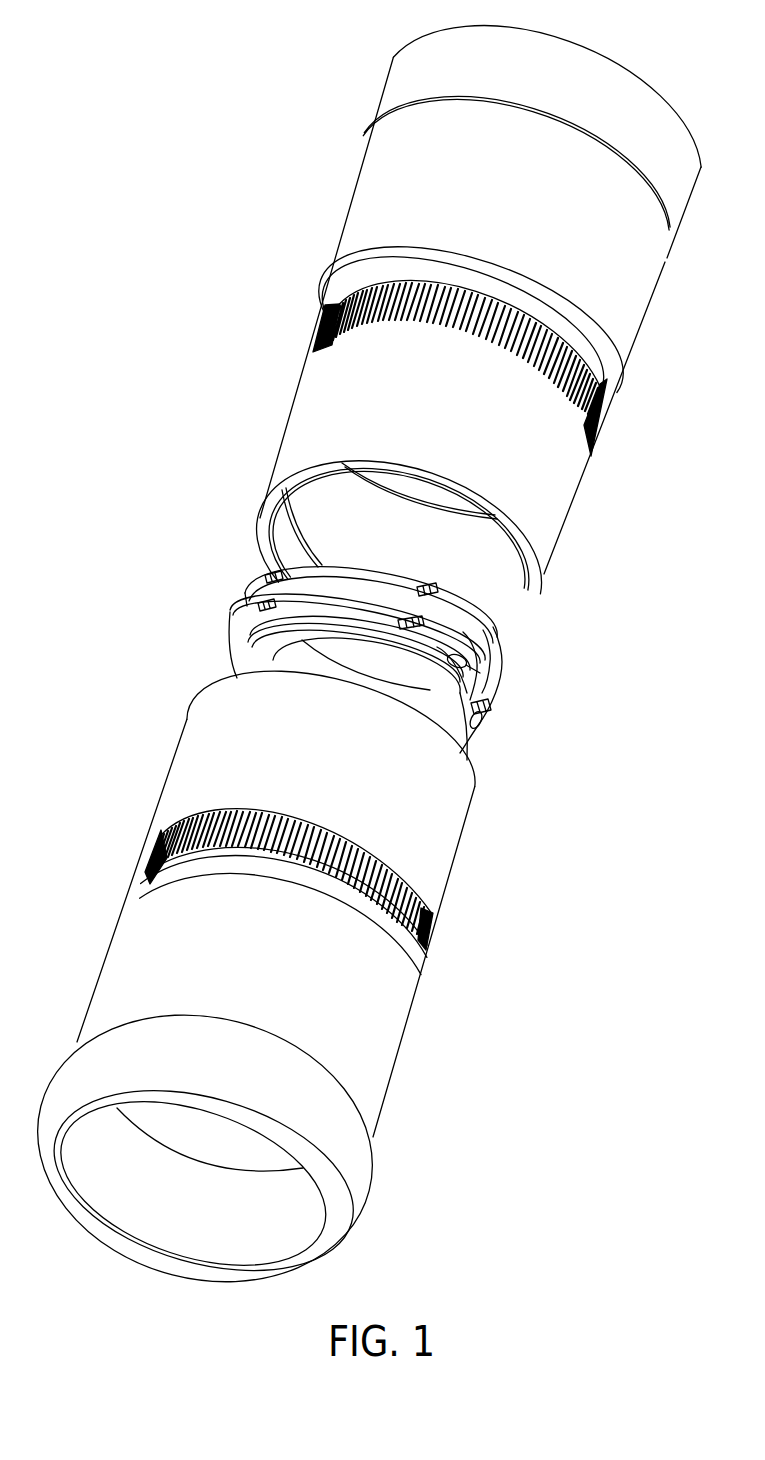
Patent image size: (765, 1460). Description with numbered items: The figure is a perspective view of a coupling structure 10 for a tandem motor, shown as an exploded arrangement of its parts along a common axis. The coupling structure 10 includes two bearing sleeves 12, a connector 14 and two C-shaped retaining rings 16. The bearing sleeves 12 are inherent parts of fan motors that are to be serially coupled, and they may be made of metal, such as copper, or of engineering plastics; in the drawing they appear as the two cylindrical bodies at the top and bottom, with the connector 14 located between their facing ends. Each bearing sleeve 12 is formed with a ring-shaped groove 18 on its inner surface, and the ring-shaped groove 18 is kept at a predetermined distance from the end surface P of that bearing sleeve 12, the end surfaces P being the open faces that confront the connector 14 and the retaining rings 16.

The coupling structure 10 is at (226, 362).
The bearing sleeve 12 is at (354, 671).
The connector 14 is at (503, 697).
The C-shaped retaining ring 16 is at (472, 652).
The ring-shaped groove 18 is at (505, 606).
The end surface P is at (263, 518).